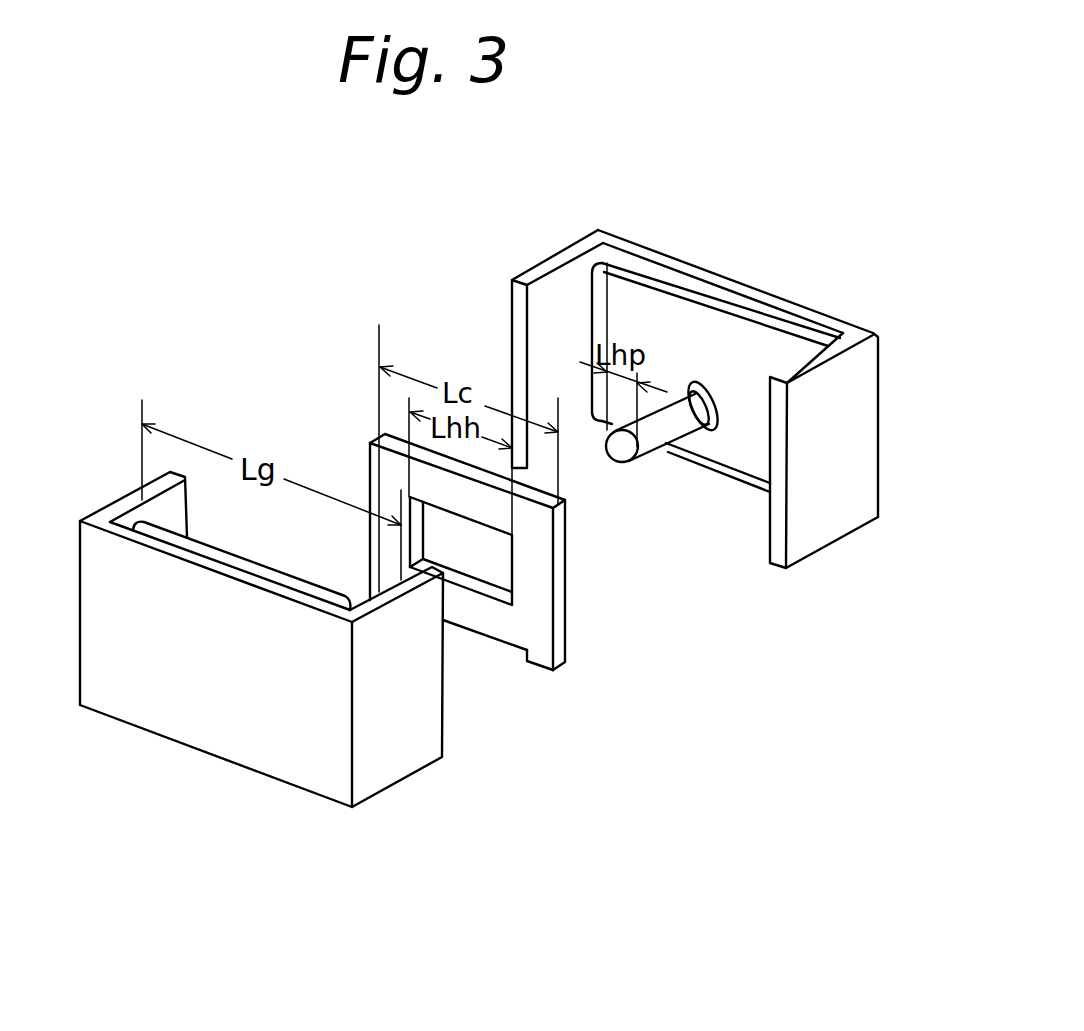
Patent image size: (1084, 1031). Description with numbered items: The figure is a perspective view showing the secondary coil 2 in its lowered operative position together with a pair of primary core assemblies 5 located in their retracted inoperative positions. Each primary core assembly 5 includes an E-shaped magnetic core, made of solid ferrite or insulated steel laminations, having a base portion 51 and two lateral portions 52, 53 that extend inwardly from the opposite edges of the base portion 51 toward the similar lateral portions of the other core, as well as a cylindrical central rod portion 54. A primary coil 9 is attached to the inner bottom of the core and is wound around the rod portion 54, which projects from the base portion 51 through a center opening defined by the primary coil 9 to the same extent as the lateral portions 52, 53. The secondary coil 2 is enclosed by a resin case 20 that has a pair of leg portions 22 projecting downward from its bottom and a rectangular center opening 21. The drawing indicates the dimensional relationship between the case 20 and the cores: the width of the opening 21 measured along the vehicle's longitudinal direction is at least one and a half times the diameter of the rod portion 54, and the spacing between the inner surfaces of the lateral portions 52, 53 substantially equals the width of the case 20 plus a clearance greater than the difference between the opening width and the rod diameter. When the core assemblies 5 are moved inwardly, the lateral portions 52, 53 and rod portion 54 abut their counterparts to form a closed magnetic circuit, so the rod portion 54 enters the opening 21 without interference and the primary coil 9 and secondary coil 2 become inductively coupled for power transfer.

The secondary coil 2 is at (551, 608).
The resin case 20 is at (540, 622).
The rectangular center opening 21 is at (493, 567).
The leg portions 22 is at (538, 658).
The primary core assembly 5 is at (506, 541).
The base portion 51 is at (172, 700).
The lateral portion 52 is at (387, 753).
The lateral portion 53 is at (150, 510).
The cylindrical central rod portion 54 is at (647, 445).
The primary coil 9 is at (215, 538).